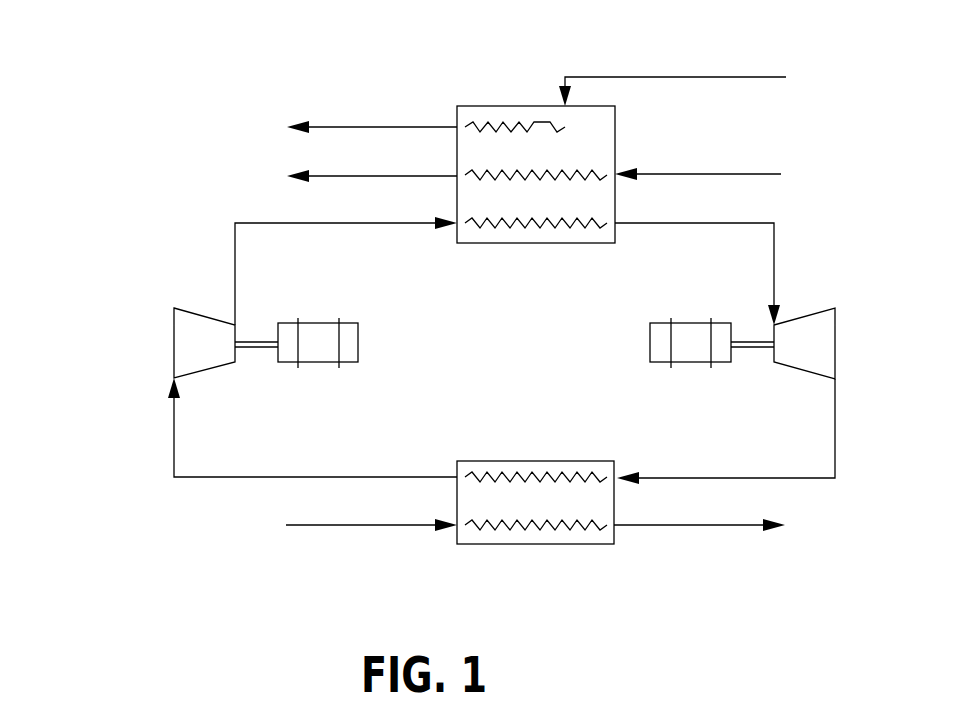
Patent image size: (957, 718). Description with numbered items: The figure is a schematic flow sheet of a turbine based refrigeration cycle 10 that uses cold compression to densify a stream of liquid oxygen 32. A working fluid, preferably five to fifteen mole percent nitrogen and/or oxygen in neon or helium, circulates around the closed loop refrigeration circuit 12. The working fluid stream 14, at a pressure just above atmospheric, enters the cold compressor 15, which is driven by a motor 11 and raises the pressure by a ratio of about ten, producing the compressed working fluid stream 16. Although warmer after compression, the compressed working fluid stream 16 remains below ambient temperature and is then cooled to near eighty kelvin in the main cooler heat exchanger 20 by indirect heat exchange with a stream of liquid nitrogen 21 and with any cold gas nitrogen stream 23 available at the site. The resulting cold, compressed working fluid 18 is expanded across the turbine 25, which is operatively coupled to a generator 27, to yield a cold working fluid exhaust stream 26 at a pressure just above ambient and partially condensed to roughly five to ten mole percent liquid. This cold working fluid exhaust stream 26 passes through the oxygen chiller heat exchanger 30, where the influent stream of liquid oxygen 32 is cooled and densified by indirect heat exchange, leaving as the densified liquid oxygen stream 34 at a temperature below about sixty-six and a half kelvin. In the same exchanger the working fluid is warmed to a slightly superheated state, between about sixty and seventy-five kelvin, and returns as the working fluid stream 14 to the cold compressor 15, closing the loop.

The turbine based refrigeration cycle 10 is at (128, 106).
The motor 11 is at (322, 362).
The closed loop refrigeration circuit 12 is at (155, 486).
The working fluid stream 14 is at (214, 478).
The cold compressor 15 is at (205, 312).
The compressed working fluid stream 16 is at (258, 223).
The cold compressed working fluid 18 is at (775, 223).
The main cooler heat exchanger 20 is at (470, 106).
The stream of liquid nitrogen 21 is at (672, 174).
The cold gas nitrogen stream 23 is at (632, 77).
The turbine 25 is at (812, 314).
The cold working fluid exhaust stream 26 is at (835, 455).
The generator 27 is at (688, 362).
The oxygen chiller heat exchanger 30 is at (478, 460).
The stream of liquid oxygen 32 is at (378, 525).
The densified liquid oxygen stream 34 is at (654, 525).